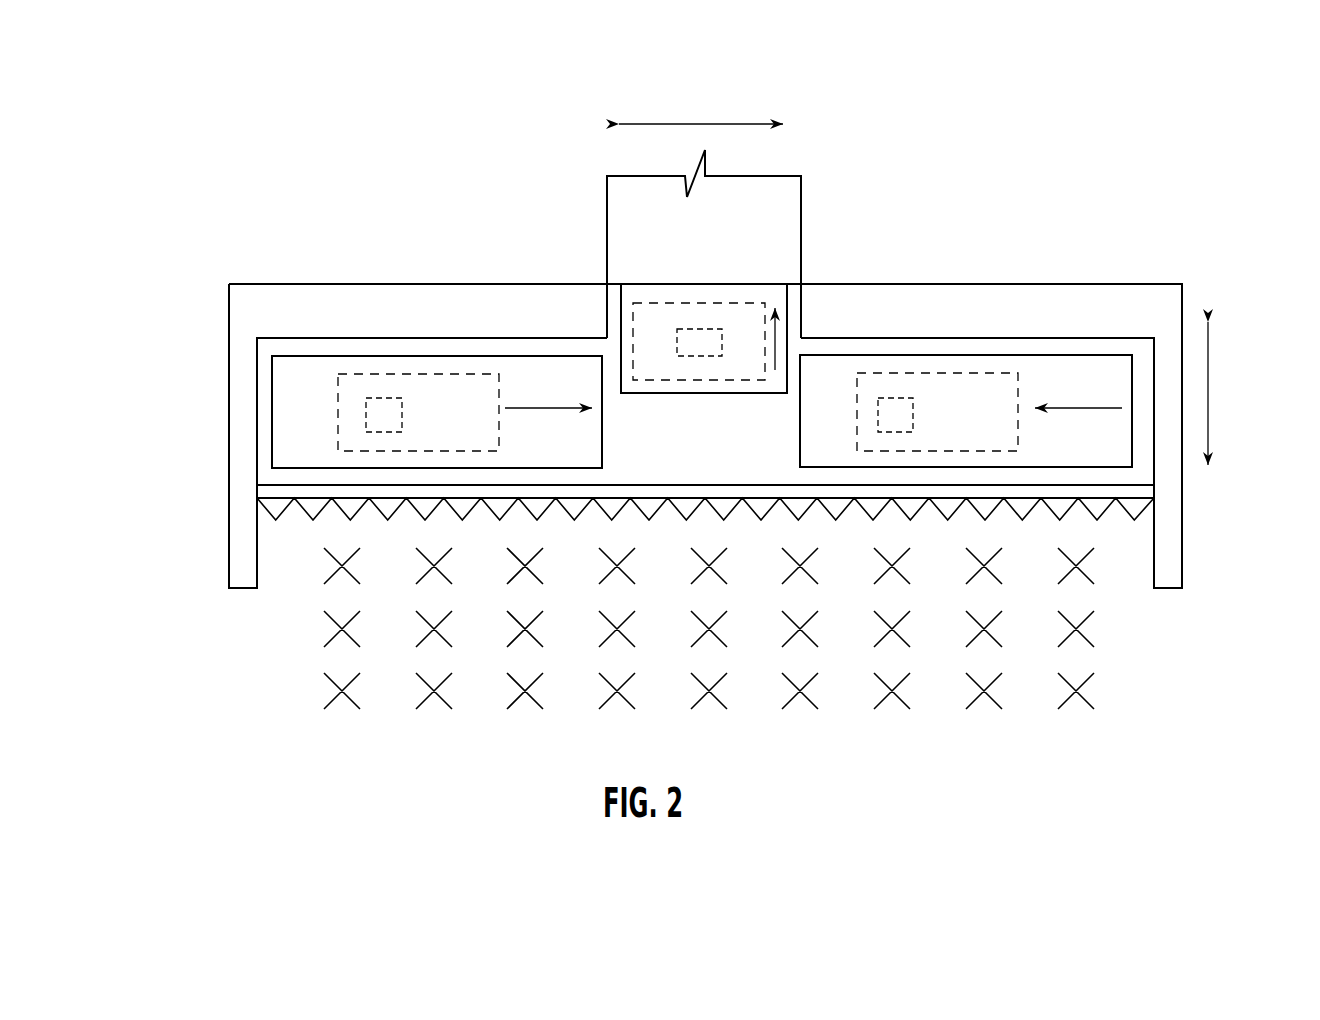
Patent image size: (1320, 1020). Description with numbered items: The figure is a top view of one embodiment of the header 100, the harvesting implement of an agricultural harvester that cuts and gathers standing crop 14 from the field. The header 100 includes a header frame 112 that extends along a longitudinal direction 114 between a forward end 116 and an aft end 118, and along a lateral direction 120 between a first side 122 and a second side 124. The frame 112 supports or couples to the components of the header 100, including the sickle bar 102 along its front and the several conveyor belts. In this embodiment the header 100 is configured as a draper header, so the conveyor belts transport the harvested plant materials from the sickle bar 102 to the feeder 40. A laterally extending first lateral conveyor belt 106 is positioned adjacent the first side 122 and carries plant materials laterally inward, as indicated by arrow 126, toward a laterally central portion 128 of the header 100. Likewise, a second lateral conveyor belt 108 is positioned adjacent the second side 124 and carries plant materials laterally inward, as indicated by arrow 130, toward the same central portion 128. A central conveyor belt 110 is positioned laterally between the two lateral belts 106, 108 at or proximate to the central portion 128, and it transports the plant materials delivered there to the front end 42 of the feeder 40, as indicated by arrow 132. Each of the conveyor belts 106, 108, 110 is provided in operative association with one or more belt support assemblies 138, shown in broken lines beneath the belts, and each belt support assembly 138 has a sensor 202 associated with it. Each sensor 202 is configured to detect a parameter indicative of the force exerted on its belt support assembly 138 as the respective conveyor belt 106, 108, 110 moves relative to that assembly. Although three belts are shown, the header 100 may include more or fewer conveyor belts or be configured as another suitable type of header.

The header 100 is at (290, 135).
The standing crop 14 is at (979, 769).
The feeder 40 is at (805, 210).
The front end of the feeder 42 is at (763, 284).
The sickle bar 102 is at (656, 514).
The first lateral conveyor belt 106 is at (835, 382).
The second lateral conveyor belt 108 is at (322, 378).
The central conveyor belt 110 is at (643, 320).
The header frame 112 is at (417, 317).
The longitudinal direction 114 is at (1213, 398).
The forward end 116 is at (1141, 652).
The aft end 118 is at (1097, 240).
The lateral direction 120 is at (704, 122).
The first side 122 is at (1212, 280).
The second side 124 is at (205, 523).
The arrow 126 is at (1087, 409).
The laterally central portion 128 is at (716, 453).
The arrow 130 is at (546, 410).
The arrow 132 is at (778, 333).
The belt support assembly 138 is at (362, 372).
The sensor 202 is at (366, 416).